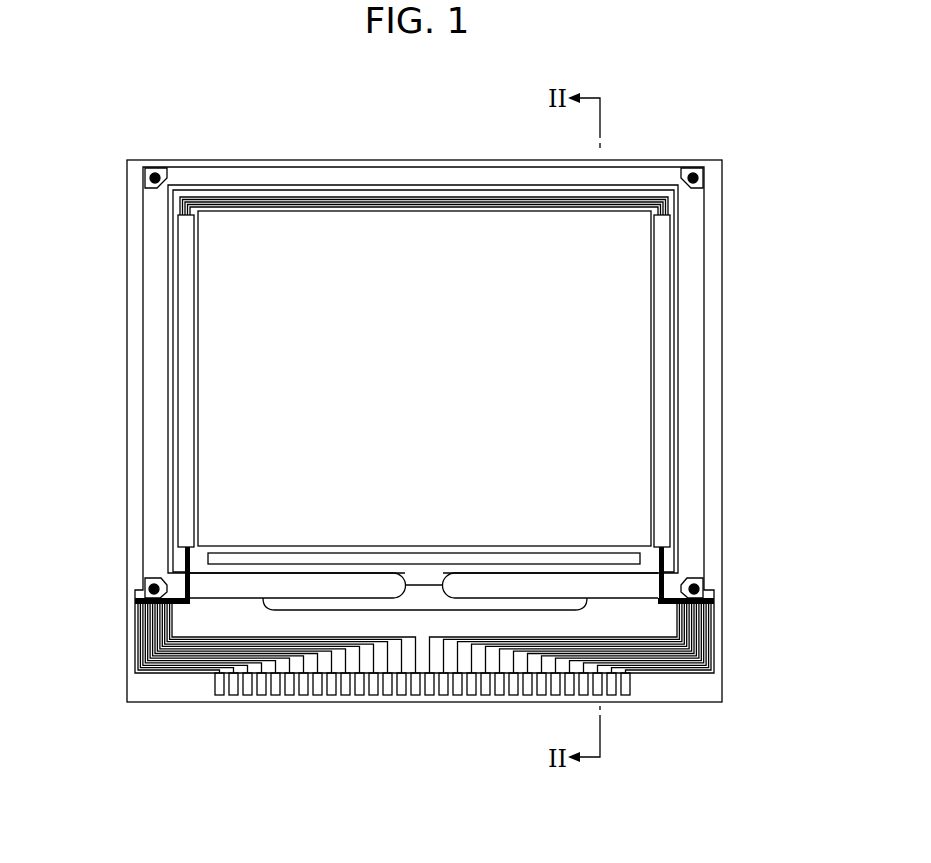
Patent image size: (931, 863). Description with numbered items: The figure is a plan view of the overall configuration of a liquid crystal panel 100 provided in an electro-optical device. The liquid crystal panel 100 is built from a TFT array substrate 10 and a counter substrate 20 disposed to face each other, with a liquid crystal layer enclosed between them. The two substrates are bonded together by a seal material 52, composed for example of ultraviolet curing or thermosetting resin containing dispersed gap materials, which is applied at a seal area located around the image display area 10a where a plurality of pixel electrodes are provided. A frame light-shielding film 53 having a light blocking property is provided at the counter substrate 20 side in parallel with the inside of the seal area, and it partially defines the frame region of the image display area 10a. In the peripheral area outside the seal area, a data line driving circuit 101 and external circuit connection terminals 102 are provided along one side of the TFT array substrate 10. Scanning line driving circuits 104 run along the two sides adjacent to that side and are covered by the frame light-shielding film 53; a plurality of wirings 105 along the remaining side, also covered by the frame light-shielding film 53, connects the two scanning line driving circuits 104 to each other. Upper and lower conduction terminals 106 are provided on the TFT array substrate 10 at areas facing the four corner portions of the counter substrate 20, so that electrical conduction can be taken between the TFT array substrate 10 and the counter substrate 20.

The liquid crystal panel 100 is at (669, 90).
The TFT array substrate 10 is at (250, 166).
The image display area 10a is at (245, 333).
The counter substrate 20 is at (445, 168).
The seal material 52 is at (697, 318).
The frame light-shielding film 53 is at (665, 557).
The scanning line driving circuit 104 is at (664, 381).
The wiring 105 is at (353, 204).
The upper and lower conduction terminal 106 is at (170, 172).
The data line driving circuit 101 is at (198, 628).
The external circuit connection terminal 102 is at (388, 680).